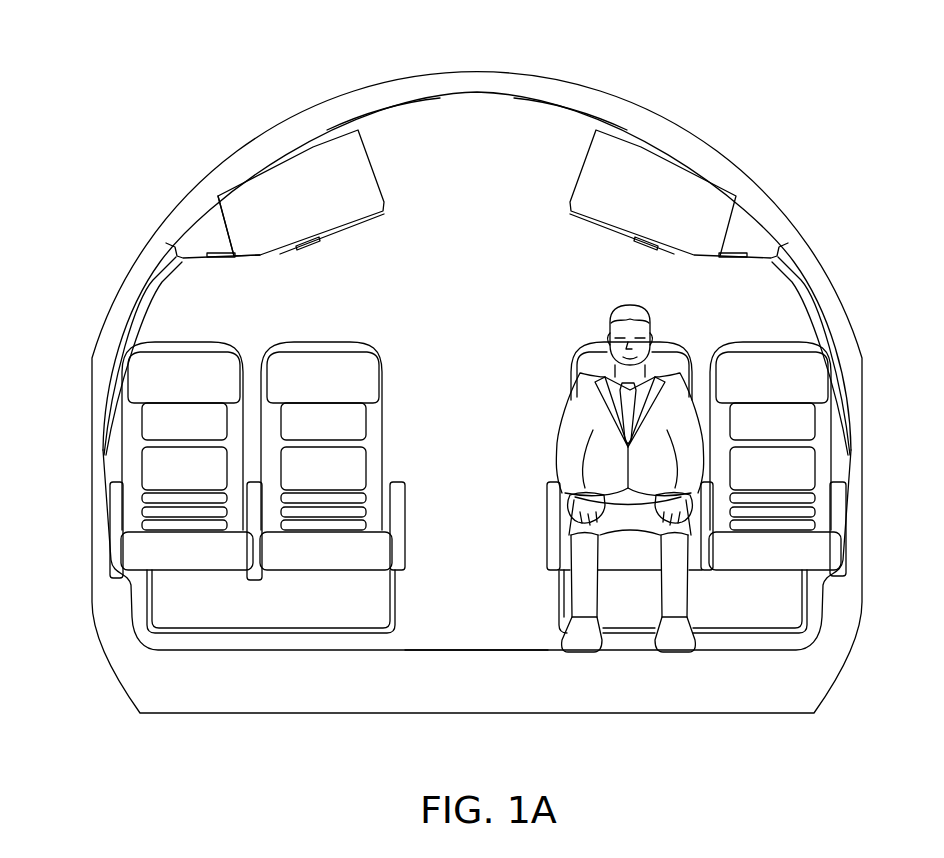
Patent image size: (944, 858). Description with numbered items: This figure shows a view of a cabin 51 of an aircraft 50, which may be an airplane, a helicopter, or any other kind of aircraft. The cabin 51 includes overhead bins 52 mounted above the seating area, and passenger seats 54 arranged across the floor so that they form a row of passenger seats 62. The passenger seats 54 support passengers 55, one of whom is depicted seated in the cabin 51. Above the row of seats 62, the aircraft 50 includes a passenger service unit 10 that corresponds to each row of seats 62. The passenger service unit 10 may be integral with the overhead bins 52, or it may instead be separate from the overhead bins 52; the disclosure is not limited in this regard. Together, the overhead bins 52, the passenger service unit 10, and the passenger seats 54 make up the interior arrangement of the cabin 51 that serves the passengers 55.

The aircraft 50 is at (112, 92).
The passenger service unit 10 is at (300, 203).
The overhead bins 52 is at (253, 217).
The row of passenger seats 62 is at (413, 424).
The passenger seats 54 is at (353, 427).
The passengers 55 is at (716, 315).
The cabin 51 is at (501, 551).